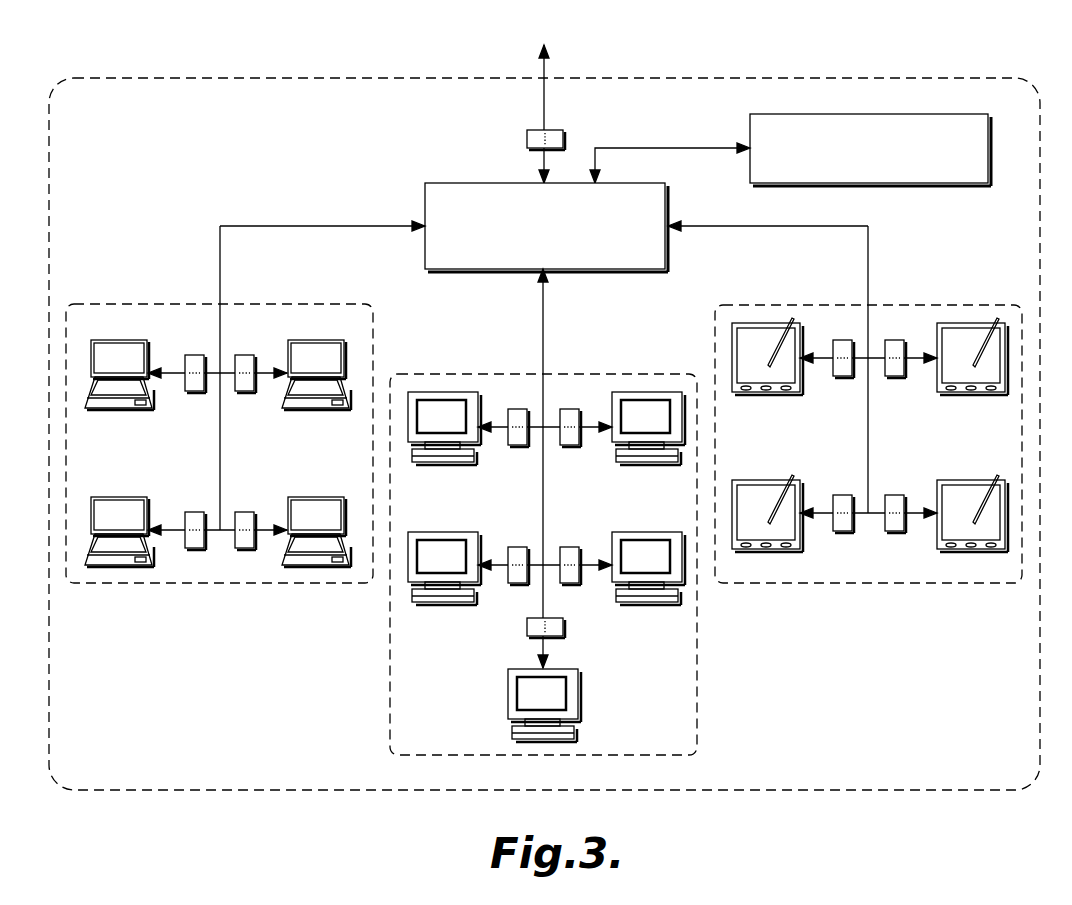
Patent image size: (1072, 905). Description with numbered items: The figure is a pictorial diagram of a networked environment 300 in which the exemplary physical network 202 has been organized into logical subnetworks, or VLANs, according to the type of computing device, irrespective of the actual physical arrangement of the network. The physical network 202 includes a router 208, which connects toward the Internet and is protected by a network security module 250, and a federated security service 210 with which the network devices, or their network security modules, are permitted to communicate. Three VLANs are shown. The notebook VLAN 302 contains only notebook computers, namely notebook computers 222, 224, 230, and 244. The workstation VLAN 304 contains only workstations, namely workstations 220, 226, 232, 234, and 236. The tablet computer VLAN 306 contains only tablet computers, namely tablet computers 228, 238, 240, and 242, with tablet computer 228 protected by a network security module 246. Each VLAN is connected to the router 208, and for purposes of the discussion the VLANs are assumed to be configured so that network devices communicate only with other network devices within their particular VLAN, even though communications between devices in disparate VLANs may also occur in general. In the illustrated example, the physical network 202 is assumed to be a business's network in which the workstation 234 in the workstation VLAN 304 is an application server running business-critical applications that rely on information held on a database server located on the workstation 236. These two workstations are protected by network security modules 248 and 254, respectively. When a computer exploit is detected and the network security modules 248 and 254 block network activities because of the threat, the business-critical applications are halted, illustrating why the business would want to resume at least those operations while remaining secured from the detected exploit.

The network system 300 is at (100, 30).
The physical network 202 is at (219, 78).
The router 208 is at (450, 183).
The federated security service 210 is at (937, 114).
The network security module 250 is at (563, 138).
The workstation 220 is at (440, 392).
The notebook computer 222 is at (112, 340).
The notebook computer 224 is at (318, 340).
The workstation 226 is at (645, 392).
The tablet computer 228 is at (765, 323).
The notebook computer 230 is at (118, 567).
The workstation 232 is at (440, 602).
The workstation 234 is at (645, 602).
The workstation 236 is at (508, 703).
The tablet computer 238 is at (970, 323).
The tablet computer 240 is at (765, 549).
The tablet computer 242 is at (970, 549).
The notebook computer 244 is at (322, 567).
The network security module 246 is at (843, 377).
The network security module 248 is at (568, 548).
The network security module 254 is at (563, 627).
The notebook VLAN 302 is at (220, 583).
The workstation VLAN 304 is at (390, 675).
The tablet computer VLAN 306 is at (870, 583).